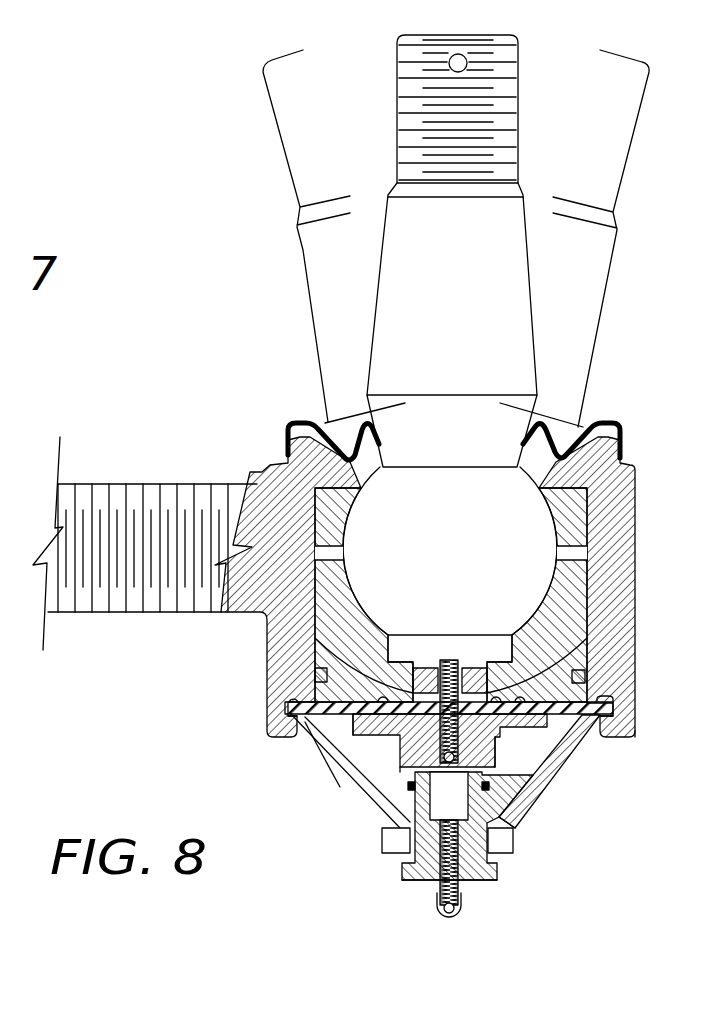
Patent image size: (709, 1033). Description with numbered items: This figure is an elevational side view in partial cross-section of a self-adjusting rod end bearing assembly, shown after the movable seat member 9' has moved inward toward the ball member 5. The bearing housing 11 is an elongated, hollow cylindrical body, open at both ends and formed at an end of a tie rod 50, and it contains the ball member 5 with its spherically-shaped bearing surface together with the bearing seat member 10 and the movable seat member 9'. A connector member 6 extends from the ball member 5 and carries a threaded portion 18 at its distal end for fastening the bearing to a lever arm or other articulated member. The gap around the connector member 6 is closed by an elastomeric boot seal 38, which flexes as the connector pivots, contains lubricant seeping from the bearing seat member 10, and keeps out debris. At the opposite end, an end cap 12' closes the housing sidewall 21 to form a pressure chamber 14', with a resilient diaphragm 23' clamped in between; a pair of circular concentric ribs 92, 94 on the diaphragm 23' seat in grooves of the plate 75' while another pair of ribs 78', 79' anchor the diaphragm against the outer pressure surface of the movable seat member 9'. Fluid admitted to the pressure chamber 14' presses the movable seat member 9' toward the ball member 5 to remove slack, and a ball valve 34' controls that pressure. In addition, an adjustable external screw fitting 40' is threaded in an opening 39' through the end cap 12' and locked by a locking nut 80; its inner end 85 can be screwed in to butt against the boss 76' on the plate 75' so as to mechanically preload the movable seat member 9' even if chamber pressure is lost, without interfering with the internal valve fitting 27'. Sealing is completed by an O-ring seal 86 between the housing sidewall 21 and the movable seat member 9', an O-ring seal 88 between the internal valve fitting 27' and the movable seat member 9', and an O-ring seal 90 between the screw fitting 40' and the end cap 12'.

The threaded portion 18 is at (518, 82).
The connector member 6 is at (452, 325).
The ball member 5 is at (450, 584).
The boot seal 38 is at (605, 422).
The tie rod 50 is at (137, 484).
The bearing seat member 10 is at (578, 512).
The movable seat member 9' is at (494, 595).
The O-ring seal 88 is at (335, 632).
The O-ring seal 86 is at (312, 673).
The circular concentric rib 79' is at (629, 632).
The circular concentric rib 78' is at (550, 653).
The internal valve fitting 27' is at (425, 666).
The housing sidewall 21 is at (620, 710).
The pressure chamber 14' is at (379, 766).
The end cap 12' is at (431, 793).
The ball valve 34' is at (528, 826).
The opening 39' is at (536, 868).
The locking nut 80 is at (517, 840).
The adjustable external screw fitting 40' is at (514, 892).
The bearing housing 11 is at (640, 680).
The circular concentric rib 92 is at (590, 750).
The circular concentric rib 94 is at (512, 737).
The O-ring seal 90 is at (515, 825).
The diaphragm 23' is at (268, 730).
The plate 75' is at (278, 750).
The boss 76' is at (290, 784).
The inner end 85 is at (407, 777).